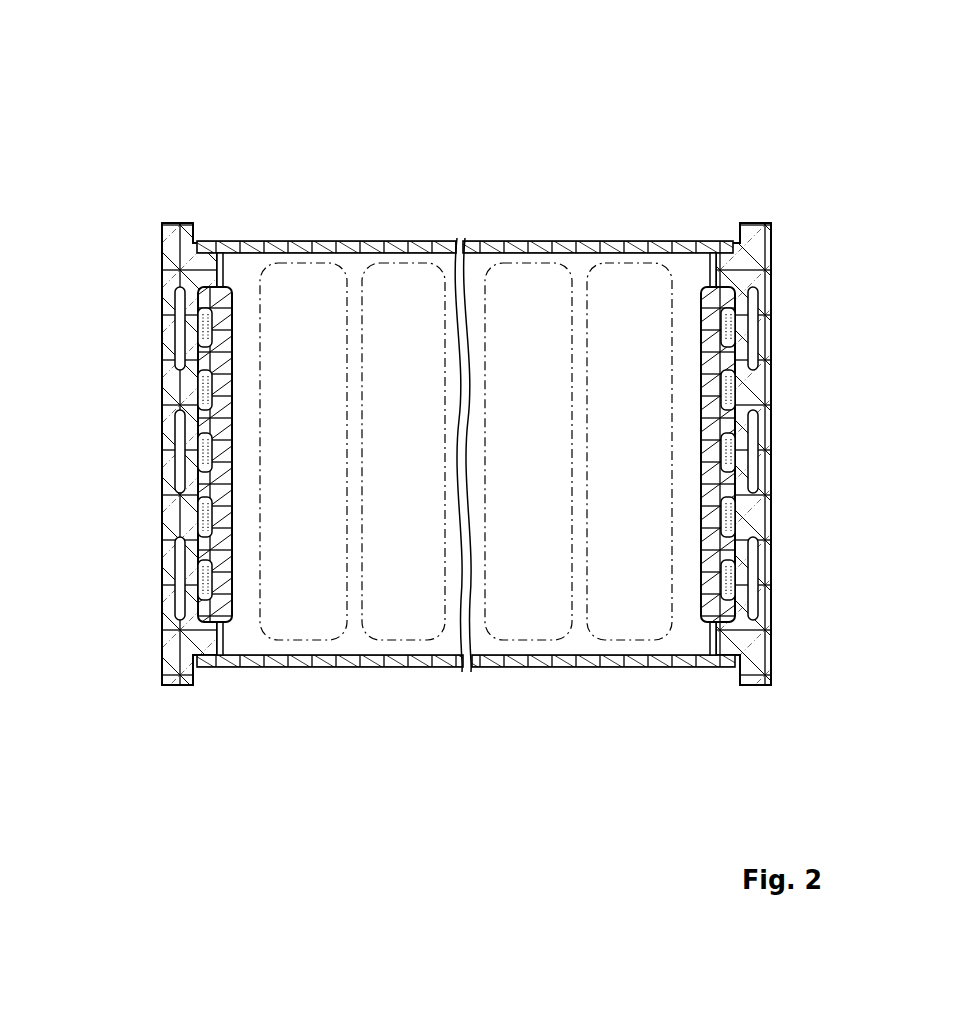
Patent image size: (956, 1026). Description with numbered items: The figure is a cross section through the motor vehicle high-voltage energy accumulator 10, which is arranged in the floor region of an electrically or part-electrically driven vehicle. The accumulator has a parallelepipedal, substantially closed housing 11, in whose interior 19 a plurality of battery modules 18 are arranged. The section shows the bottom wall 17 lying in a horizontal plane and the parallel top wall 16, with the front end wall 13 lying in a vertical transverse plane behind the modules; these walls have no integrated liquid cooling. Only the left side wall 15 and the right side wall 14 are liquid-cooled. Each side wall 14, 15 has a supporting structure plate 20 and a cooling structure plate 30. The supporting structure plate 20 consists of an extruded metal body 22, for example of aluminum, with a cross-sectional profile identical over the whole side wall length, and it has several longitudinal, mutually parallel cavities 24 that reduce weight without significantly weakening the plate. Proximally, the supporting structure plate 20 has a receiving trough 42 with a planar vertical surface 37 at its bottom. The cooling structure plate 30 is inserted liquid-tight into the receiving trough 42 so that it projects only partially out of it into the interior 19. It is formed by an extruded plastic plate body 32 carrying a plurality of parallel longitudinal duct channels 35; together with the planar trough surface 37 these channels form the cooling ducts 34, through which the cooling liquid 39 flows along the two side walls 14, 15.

The motor vehicle high-voltage energy accumulator 10 is at (113, 201).
The housing 11 is at (660, 98).
The front end wall 13 is at (577, 262).
The right side wall 14 is at (695, 717).
The left side wall 15 is at (162, 717).
The top wall 16 is at (340, 236).
The bottom wall 17 is at (352, 673).
The battery module 18 is at (295, 645).
The interior 19 is at (477, 270).
The supporting structure plate 20 is at (177, 213).
The extruded metal body 22 is at (167, 266).
The cavities 24 is at (180, 366).
The cooling structure plate 30 is at (225, 278).
The plastic plate body 32 is at (222, 300).
The cooling ducts 34 is at (201, 320).
The duct channels 35 is at (199, 520).
The planar vertical surface 37 is at (224, 643).
The cooling liquid 39 is at (185, 565).
The receiving trough 42 is at (203, 546).